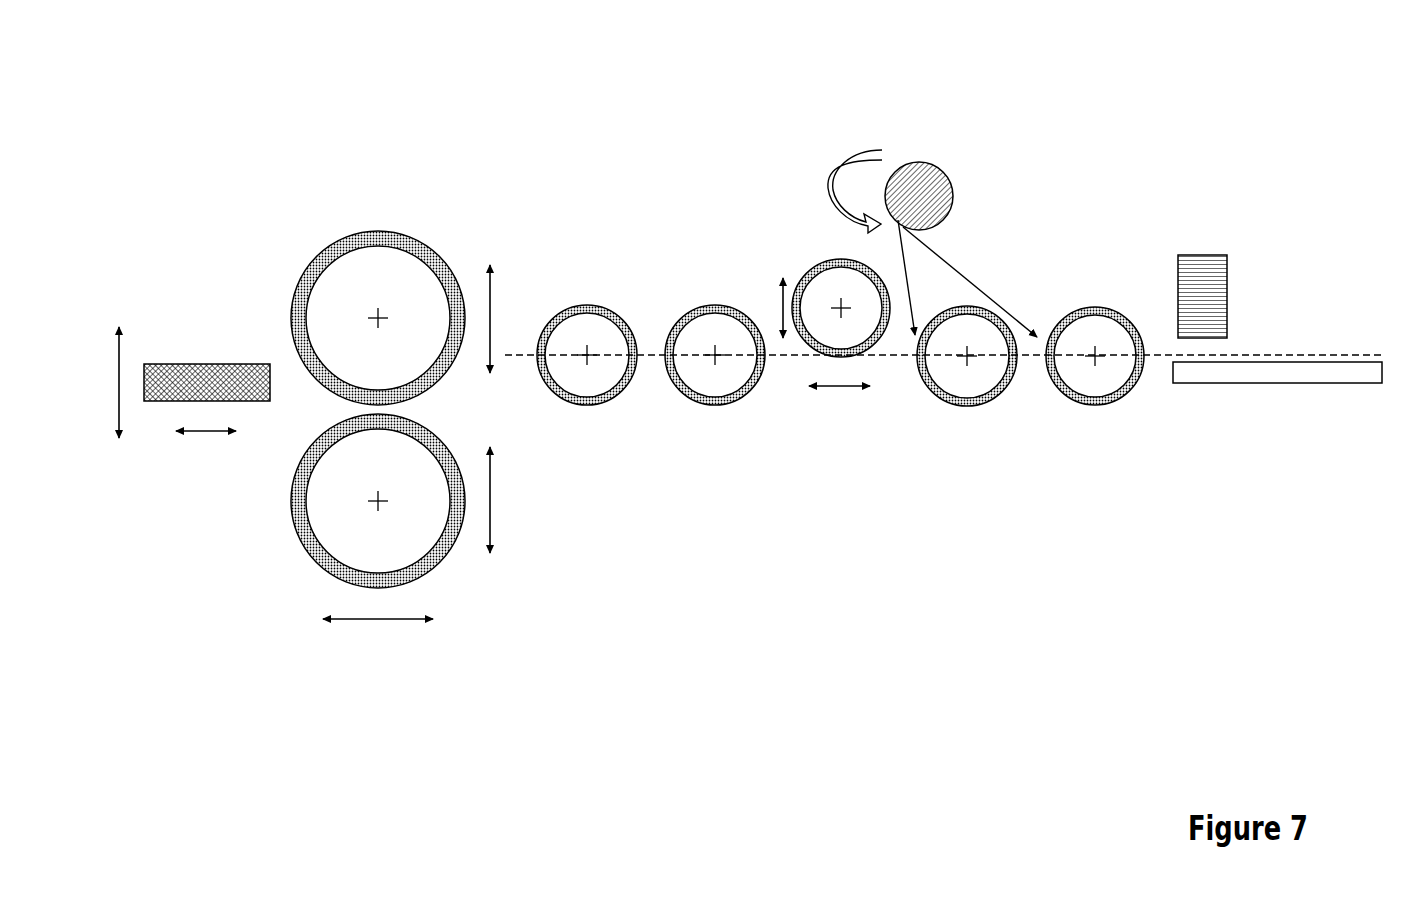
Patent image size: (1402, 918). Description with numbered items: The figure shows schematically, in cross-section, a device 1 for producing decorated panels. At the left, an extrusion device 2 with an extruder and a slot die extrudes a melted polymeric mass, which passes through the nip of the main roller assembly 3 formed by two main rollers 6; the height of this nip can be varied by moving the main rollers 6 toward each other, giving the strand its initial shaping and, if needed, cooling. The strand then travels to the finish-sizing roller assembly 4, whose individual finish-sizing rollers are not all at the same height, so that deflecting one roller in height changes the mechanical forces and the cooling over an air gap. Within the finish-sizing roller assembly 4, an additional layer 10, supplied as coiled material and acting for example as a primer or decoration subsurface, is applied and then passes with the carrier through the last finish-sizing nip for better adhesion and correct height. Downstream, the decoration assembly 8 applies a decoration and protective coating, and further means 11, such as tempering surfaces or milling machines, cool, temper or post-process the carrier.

The device 1 is at (502, 117).
The extrusion device 2 is at (208, 317).
The main roller assembly 3 is at (333, 215).
The finish-sizing roller assembly 4 is at (688, 412).
The main roller 6 is at (307, 573).
The decoration assembly 8 is at (1228, 240).
The additional layer 10 is at (947, 152).
The further means 11 is at (1225, 398).